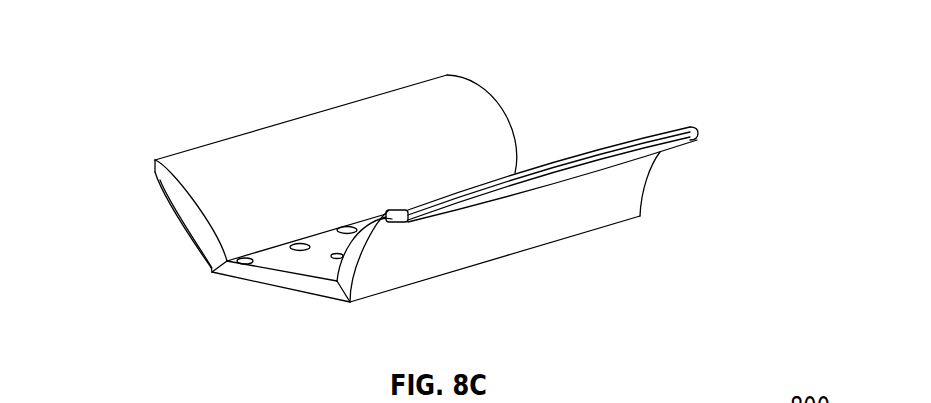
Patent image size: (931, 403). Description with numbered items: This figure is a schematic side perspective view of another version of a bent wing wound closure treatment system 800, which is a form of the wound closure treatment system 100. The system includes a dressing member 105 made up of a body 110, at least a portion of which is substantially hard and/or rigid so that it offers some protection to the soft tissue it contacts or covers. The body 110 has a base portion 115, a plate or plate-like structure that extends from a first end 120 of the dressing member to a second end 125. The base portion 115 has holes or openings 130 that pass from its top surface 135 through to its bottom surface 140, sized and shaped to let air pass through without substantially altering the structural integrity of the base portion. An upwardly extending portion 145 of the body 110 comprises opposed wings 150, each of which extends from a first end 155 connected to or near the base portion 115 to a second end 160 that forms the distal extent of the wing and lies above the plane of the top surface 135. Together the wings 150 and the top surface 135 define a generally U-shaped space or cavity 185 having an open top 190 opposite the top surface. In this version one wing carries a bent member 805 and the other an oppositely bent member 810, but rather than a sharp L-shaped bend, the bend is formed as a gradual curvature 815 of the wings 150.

The bent wing wound closure treatment system 800 is at (451, 194).
The wound closure treatment system 100 is at (451, 194).
The dressing member 105 is at (451, 194).
The body 110 is at (451, 194).
The base portion 115 is at (354, 287).
The first end 120 is at (279, 136).
The second end 125 is at (341, 136).
The holes or openings 130 is at (287, 248).
The top surface 135 is at (318, 268).
The bottom surface 140 is at (354, 287).
The upwardly extending portion 145 is at (354, 287).
The wings 150 is at (211, 229).
The first end of wing 155 is at (341, 136).
The second end of wing 160 is at (358, 100).
The space or cavity 185 is at (552, 150).
The open top 190 is at (462, 98).
The bent member 805 is at (341, 136).
The oppositely bent member 810 is at (660, 133).
The gradual curvature 815 is at (341, 136).